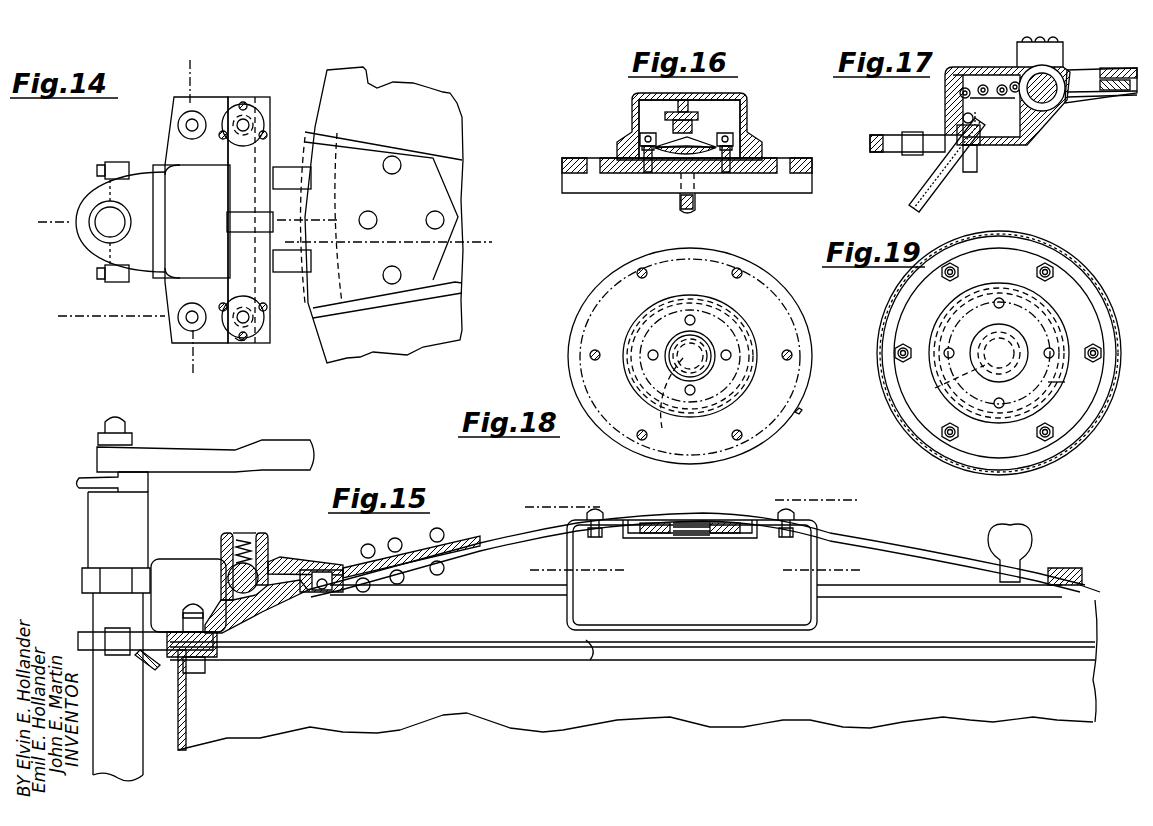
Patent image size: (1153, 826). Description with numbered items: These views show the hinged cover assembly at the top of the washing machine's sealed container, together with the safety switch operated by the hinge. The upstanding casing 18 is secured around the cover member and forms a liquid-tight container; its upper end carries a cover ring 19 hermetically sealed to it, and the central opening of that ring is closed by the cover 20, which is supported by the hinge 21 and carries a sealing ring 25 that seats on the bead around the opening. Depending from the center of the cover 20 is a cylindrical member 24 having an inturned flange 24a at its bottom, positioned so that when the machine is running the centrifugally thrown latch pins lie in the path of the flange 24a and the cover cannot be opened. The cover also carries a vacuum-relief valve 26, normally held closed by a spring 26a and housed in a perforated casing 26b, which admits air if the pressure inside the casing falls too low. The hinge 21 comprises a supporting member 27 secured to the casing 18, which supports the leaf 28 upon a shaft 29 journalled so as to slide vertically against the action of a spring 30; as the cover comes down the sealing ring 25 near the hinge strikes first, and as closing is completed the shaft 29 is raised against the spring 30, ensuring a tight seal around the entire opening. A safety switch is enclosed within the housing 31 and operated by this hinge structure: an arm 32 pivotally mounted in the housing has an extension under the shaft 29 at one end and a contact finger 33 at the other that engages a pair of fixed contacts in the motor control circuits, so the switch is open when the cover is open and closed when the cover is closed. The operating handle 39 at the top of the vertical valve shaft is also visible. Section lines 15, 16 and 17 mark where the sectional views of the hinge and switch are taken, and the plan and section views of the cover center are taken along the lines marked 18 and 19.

In FIG. 14, the section line 15— 15 is at (483, 228).
In FIG. 14, the section line 16— 16 is at (164, 358).
In FIG. 14, the section line 17— 17 is at (345, 203).
In FIG. 15, the casing 18 is at (825, 519).
In FIG. 15, the cover ring 19 is at (836, 549).
In FIG. 14, the cover 20 is at (413, 93).
In FIG. 17, the cover 20 is at (1137, 93).
In FIG. 18, the cover 20 is at (798, 320).
In FIG. 15, the cover 20 is at (940, 545).
In FIG. 17, the hinge 21 is at (1063, 50).
In FIG. 15, the hinge 21 is at (282, 556).
In FIG. 18, the cylindrical member 24 is at (802, 412).
In FIG. 19, the cylindrical member 24 is at (1032, 470).
In FIG. 15, the cylindrical member 24 is at (573, 603).
In FIG. 15, the inturned flange 24a is at (586, 665).
In FIG. 17, the sealing ring 25 is at (1112, 92).
In FIG. 15, the sealing ring 25 is at (315, 596).
In FIG. 18, the vacuum-relief valve 26 is at (720, 375).
In FIG. 19, the vacuum-relief valve 26 is at (958, 340).
In FIG. 15, the vacuum-relief valve 26 is at (705, 517).
In FIG. 18, the spring 26a is at (676, 403).
In FIG. 19, the spring 26a is at (948, 389).
In FIG. 15, the spring 26a is at (690, 540).
In FIG. 19, the perforated casing 26b is at (1073, 386).
In FIG. 15, the perforated casing 26b is at (658, 540).
In FIG. 15, the supporting member 27 is at (258, 617).
In FIG. 14, the leaf 28 is at (401, 220).
In FIG. 17, the leaf 28 is at (1120, 68).
In FIG. 15, the leaf 28 is at (392, 548).
In FIG. 14, the shaft 29 is at (245, 338).
In FIG. 17, the shaft 29 is at (1048, 105).
In FIG. 15, the shaft 29 is at (226, 580).
In FIG. 14, the spring 30 is at (290, 322).
In FIG. 15, the spring 30 is at (246, 533).
In FIG. 14, the housing 31 is at (193, 220).
In FIG. 16, the housing 31 is at (748, 97).
In FIG. 17, the housing 31 is at (953, 103).
In FIG. 15, the housing 31 is at (185, 554).
In FIG. 16, the arm 32 is at (695, 135).
In FIG. 17, the arm 32 is at (1000, 86).
In FIG. 16, the contact finger 33 is at (668, 133).
In FIG. 17, the contact finger 33 is at (960, 113).
In FIG. 15, the operating handle 39 is at (282, 440).